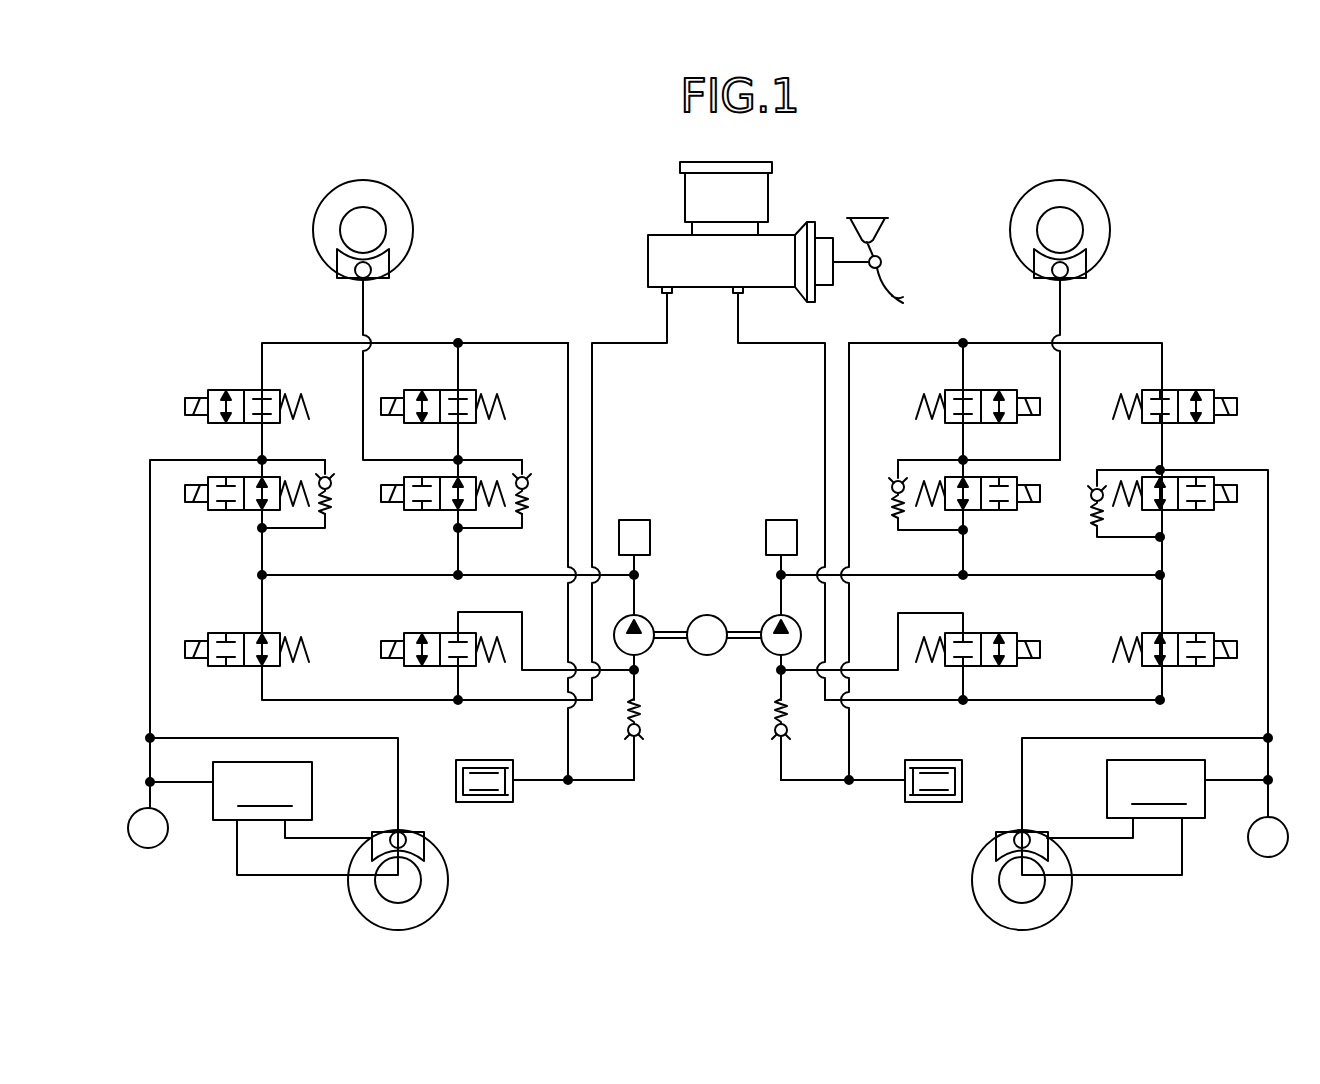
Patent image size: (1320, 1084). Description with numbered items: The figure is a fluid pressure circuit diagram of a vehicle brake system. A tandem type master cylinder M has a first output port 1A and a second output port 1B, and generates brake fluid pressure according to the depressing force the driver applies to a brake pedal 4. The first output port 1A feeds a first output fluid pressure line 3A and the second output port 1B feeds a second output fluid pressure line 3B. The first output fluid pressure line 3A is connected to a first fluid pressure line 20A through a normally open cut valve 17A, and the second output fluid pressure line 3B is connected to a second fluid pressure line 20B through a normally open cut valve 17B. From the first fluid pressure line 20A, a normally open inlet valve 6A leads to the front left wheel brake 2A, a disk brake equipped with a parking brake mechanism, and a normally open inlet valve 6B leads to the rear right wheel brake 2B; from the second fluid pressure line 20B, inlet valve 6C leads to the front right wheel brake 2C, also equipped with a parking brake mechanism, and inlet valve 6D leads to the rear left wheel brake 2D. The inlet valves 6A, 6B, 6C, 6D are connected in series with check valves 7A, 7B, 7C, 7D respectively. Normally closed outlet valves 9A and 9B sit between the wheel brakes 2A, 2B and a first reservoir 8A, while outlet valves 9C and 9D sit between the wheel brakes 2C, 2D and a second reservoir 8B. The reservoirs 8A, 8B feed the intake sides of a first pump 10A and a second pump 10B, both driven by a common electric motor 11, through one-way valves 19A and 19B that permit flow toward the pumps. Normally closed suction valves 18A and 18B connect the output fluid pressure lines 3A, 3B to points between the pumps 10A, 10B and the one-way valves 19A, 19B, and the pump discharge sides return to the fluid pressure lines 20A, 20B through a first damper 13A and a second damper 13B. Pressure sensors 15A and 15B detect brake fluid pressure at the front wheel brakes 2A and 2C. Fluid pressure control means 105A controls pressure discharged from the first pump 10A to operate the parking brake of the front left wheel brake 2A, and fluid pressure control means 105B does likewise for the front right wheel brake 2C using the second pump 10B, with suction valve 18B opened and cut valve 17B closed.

The first output port 1A is at (660, 296).
The second output port 1B is at (742, 294).
The front left wheel brake 2A is at (449, 880).
The rear right wheel brake 2B is at (315, 219).
The front right wheel brake 2C is at (969, 890).
The rear left wheel brake 2D is at (1109, 222).
The first output fluid pressure line 3A is at (608, 341).
The second output fluid pressure line 3B is at (808, 342).
The brake pedal 4 is at (893, 285).
The master cylinder M is at (660, 262).
The inlet valve 6A is at (232, 510).
The inlet valve 6B is at (430, 510).
The inlet valve 6C is at (1188, 512).
The inlet valve 6D is at (992, 512).
The check valve 7A is at (340, 497).
The check valve 7B is at (538, 497).
The check valve 7C is at (1075, 505).
The check valve 7D is at (884, 500).
The first reservoir 8A is at (469, 755).
The second reservoir 8B is at (937, 759).
The outlet valve 9A is at (220, 390).
The outlet valve 9B is at (470, 389).
The outlet valve 9C is at (1185, 398).
The outlet valve 9D is at (975, 390).
The first pump 10A is at (643, 643).
The second pump 10B is at (770, 643).
The electric motor 11 is at (707, 655).
The first damper 13A is at (638, 527).
The second damper 13B is at (765, 538).
The pressure sensor 15A is at (144, 850).
The pressure sensor 15B is at (1275, 858).
The cut valve 17A is at (232, 670).
The cut valve 17B is at (1183, 670).
The suction valve 18A is at (418, 632).
The suction valve 18B is at (985, 633).
The one-way valve 19A is at (644, 740).
The one-way valve 19B is at (770, 716).
The first fluid pressure line 20A is at (470, 577).
The second fluid pressure line 20B is at (1080, 575).
The fluid pressure control means 105A is at (262, 791).
The fluid pressure control means 105B is at (1156, 789).